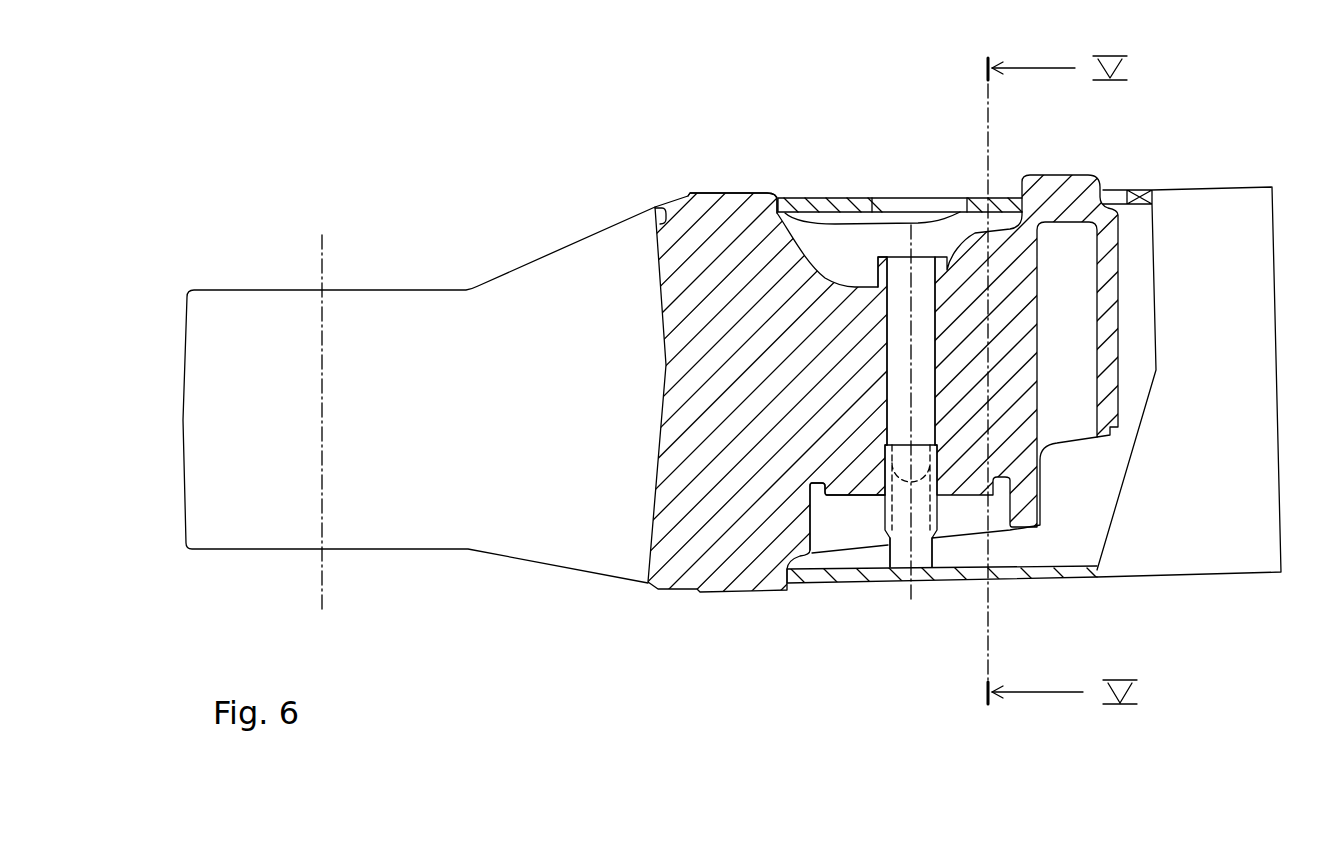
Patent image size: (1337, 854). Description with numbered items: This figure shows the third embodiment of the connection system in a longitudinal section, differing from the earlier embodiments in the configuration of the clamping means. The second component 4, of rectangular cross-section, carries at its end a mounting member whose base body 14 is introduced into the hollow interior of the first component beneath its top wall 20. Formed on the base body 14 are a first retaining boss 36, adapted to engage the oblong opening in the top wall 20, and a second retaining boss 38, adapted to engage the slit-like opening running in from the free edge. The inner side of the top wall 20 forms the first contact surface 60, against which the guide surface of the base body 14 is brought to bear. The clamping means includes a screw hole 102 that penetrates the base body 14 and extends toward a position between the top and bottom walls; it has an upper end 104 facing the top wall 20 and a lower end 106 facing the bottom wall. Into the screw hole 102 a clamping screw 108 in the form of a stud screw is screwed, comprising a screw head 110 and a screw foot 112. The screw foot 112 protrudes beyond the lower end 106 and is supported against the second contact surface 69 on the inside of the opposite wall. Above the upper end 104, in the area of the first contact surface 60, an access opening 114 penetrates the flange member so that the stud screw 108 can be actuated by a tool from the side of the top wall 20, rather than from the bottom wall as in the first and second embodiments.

The second component 4 is at (259, 487).
The base body 14 is at (712, 337).
The top wall 20 is at (1142, 197).
The first retaining boss 36 is at (1082, 188).
The second retaining boss 38 is at (705, 200).
The first contact surface 60 is at (838, 205).
The second contact surface 69 is at (885, 570).
The screw hole 102 is at (915, 368).
The upper end 104 is at (882, 256).
The lower end 106 is at (883, 493).
The clamping screw 108 is at (913, 512).
The screw head 110 is at (915, 457).
The screw foot 112 is at (925, 557).
The access opening 114 is at (908, 197).